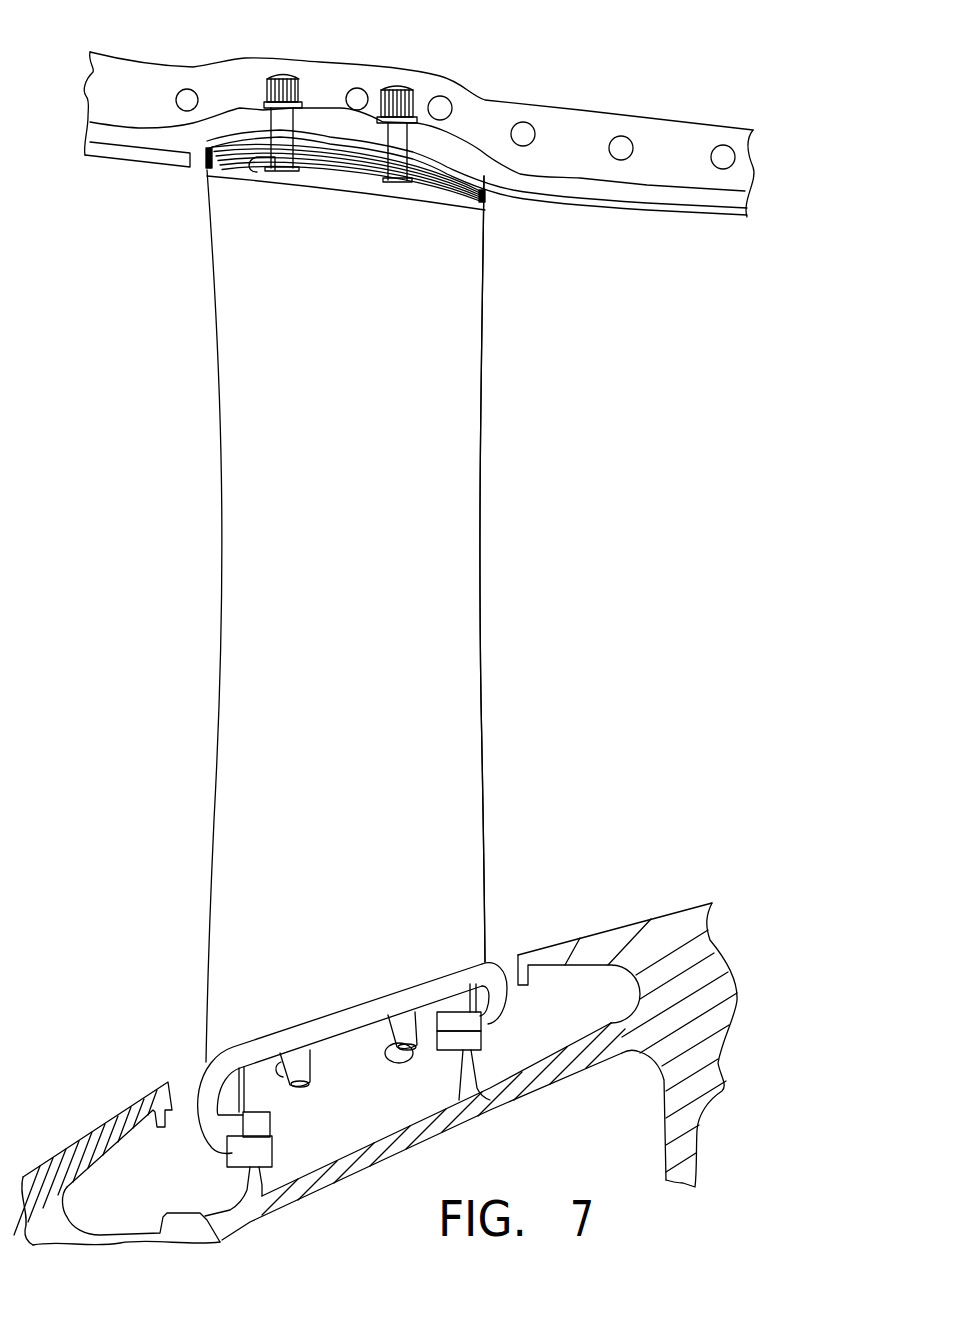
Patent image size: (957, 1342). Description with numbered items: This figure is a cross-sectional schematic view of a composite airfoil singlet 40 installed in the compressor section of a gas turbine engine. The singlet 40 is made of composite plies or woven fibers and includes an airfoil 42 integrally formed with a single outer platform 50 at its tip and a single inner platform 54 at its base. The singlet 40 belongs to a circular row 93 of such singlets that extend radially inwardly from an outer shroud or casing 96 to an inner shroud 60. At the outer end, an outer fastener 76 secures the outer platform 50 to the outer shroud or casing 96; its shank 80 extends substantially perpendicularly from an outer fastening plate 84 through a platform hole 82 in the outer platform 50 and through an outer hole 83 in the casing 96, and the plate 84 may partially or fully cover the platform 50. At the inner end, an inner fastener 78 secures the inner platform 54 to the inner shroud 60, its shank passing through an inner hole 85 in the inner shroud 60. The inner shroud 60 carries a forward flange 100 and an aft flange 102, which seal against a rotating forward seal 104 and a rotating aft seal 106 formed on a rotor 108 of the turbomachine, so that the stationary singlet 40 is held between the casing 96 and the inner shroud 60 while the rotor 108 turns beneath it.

The composite airfoil singlet 40 is at (434, 616).
The airfoil 42 is at (333, 591).
The outer platform 50 is at (337, 147).
The inner platform 54 is at (448, 962).
The inner shroud 60 is at (313, 1032).
The outer fastener 76 is at (280, 72).
The inner fastener 78 is at (417, 1047).
The shank 80 is at (305, 128).
The platform hole 82 is at (275, 170).
The outer hole 83 is at (270, 106).
The outer fastening plate 84 is at (353, 180).
The inner hole 85 is at (397, 1007).
The circular row 93 is at (445, 746).
The outer shroud or casing 96 is at (482, 103).
The forward flange 100 is at (203, 1092).
The aft flange 102 is at (493, 990).
The forward seal 104 is at (253, 1163).
The aft seal 106 is at (483, 1065).
The rotor 108 is at (379, 1074).